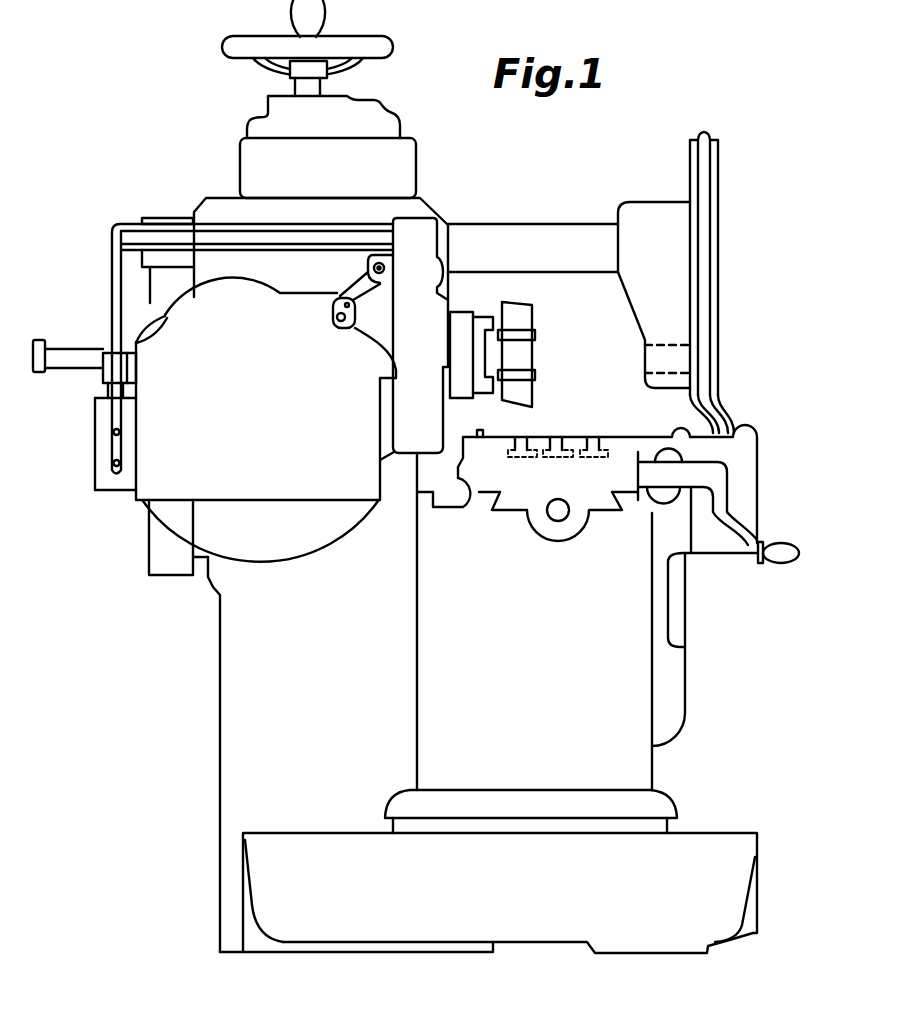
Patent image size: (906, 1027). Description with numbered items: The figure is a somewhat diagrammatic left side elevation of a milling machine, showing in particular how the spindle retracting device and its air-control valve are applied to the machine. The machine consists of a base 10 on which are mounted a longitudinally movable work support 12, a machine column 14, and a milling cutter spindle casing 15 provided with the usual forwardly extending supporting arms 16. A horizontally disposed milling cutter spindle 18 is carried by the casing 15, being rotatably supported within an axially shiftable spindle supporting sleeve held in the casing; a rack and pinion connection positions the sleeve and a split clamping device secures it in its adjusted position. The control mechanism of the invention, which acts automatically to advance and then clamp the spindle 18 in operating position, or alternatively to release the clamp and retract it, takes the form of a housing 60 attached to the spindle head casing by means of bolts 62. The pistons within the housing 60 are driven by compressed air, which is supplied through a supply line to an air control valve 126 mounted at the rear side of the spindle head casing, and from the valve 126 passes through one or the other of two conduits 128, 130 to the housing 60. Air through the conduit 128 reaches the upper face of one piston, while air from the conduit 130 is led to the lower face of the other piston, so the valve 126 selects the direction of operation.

The base 10 is at (647, 763).
The work support 12 is at (517, 503).
The machine column 14 is at (222, 706).
The milling cutter spindle casing 15 is at (422, 200).
The supporting arms 16 is at (532, 231).
The milling cutter spindle 18 is at (480, 315).
The housing 60 is at (381, 348).
The bolts 62 is at (340, 320).
The air control valve 126 is at (100, 428).
The conduit 128 is at (131, 226).
The conduit 130 is at (328, 246).